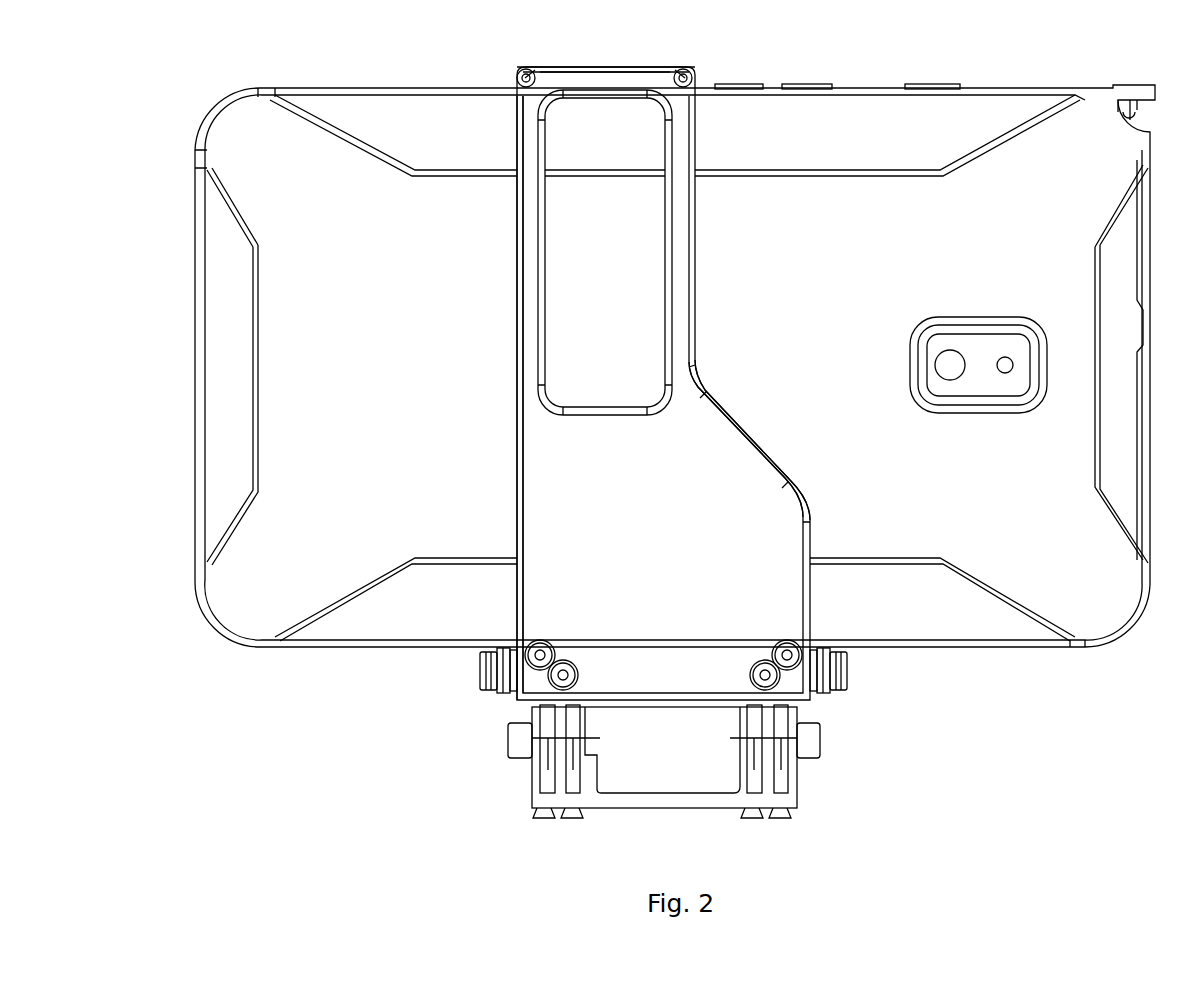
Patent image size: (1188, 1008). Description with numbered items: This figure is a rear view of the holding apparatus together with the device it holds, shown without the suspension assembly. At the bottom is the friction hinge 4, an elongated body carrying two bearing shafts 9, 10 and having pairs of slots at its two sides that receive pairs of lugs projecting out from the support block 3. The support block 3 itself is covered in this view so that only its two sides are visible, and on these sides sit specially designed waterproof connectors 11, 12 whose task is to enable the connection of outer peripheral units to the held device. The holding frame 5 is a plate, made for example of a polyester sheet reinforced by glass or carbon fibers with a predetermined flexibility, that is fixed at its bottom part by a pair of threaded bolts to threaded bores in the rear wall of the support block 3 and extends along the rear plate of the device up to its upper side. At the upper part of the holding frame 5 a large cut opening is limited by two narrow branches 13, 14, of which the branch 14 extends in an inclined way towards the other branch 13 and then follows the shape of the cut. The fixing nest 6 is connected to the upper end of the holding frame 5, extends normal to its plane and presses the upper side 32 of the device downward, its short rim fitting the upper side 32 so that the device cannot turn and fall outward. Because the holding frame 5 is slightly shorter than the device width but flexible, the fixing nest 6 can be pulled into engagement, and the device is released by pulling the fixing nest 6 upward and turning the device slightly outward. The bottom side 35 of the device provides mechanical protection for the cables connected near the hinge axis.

The support block 3 is at (672, 767).
The friction hinge 4 is at (800, 800).
The holding frame 5 is at (660, 354).
The fixing nest 6 is at (583, 67).
The bearing shaft 9 is at (513, 738).
The bearing shaft 10 is at (812, 738).
The waterproof connector 11 is at (480, 675).
The waterproof connector 12 is at (850, 675).
The branch 13 is at (517, 260).
The branch 14 is at (732, 410).
The upper side of the device 32 is at (845, 112).
The bottom side of the device 35 is at (990, 628).